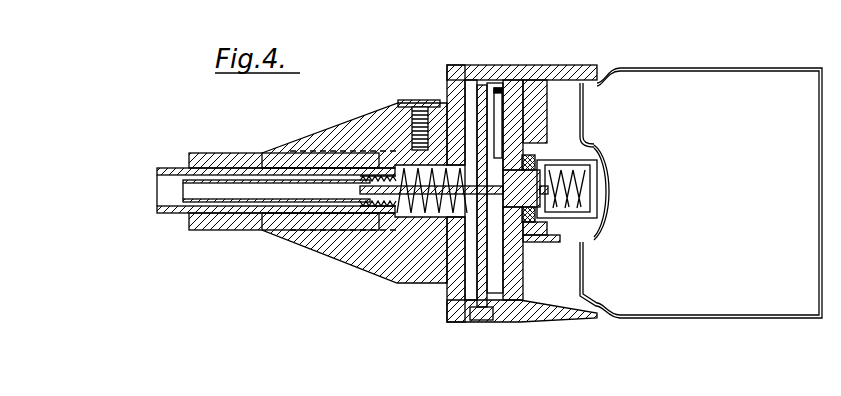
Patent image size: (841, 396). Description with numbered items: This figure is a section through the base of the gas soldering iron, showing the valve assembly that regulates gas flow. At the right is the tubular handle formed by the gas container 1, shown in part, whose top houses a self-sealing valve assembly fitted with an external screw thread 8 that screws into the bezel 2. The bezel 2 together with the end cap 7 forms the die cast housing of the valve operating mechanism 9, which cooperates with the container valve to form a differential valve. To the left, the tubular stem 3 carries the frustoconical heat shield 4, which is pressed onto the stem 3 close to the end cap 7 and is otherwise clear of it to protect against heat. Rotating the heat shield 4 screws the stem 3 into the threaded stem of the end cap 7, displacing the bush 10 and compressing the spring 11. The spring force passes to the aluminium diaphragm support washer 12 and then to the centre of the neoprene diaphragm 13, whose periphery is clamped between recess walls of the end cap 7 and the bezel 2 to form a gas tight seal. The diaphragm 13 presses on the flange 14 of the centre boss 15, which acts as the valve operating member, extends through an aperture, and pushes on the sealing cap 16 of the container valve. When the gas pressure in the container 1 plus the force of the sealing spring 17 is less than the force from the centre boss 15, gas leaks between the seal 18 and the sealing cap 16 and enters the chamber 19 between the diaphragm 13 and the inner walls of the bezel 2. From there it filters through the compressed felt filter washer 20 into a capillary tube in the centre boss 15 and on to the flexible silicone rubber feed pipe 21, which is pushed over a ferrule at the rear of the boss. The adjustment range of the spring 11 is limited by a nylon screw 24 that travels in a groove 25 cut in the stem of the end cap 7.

The gas container 1 is at (740, 68).
The bezel 2 is at (548, 318).
The stem 3 is at (182, 168).
The heat shield 4 is at (216, 153).
The end cap 7 is at (467, 237).
The external screw thread 8 is at (570, 148).
The valve operating mechanism 9 is at (477, 283).
The bush 10 is at (378, 228).
The spring 11 is at (412, 172).
The diaphragm support washer 12 is at (476, 300).
The diaphragm 13 is at (507, 95).
The flange 14 is at (533, 243).
The centre boss 15 is at (445, 140).
The sealing cap 16 is at (597, 220).
The sealing spring 17 is at (597, 166).
The seal 18 is at (551, 155).
The chamber 19 is at (498, 88).
The felt filter washer 20 is at (527, 110).
The flexible feed pipe 21 is at (183, 187).
The nylon screw 24 is at (410, 100).
The groove 25 is at (407, 167).